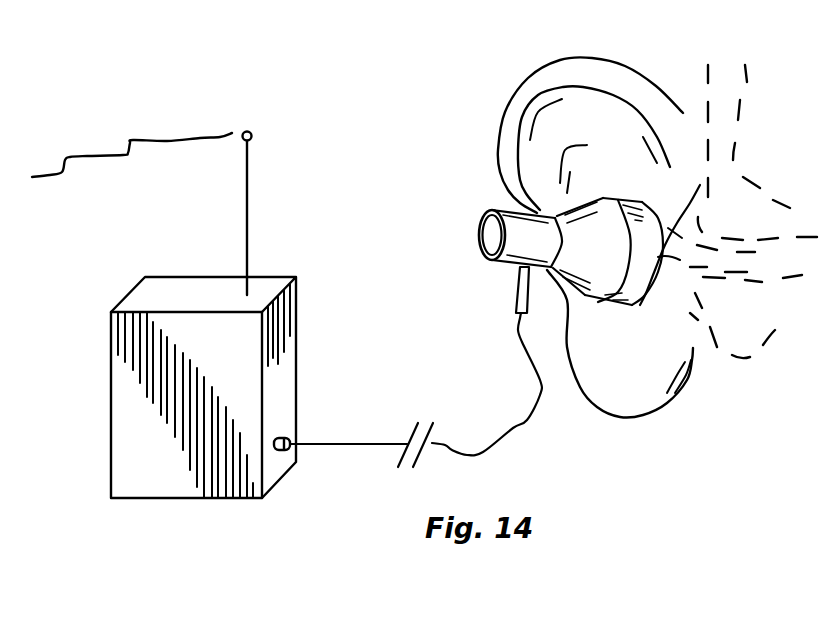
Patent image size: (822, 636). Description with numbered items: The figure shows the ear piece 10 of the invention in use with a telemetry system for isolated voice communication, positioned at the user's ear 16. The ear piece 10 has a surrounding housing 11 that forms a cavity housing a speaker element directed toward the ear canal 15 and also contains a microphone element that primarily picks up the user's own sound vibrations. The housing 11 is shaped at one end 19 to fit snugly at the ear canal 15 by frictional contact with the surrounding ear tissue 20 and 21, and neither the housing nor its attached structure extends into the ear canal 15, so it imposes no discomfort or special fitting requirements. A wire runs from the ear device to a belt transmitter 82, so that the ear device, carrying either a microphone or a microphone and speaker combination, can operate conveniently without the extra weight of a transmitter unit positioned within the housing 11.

The belt transmitter 82 is at (133, 423).
The ear piece 10 is at (466, 229).
The ear tissue 21 is at (612, 202).
The end of housing 19 is at (638, 287).
The housing 11 is at (579, 299).
The ear 16 is at (622, 85).
The ear tissue 20 is at (560, 308).
The ear canal 15 is at (700, 248).